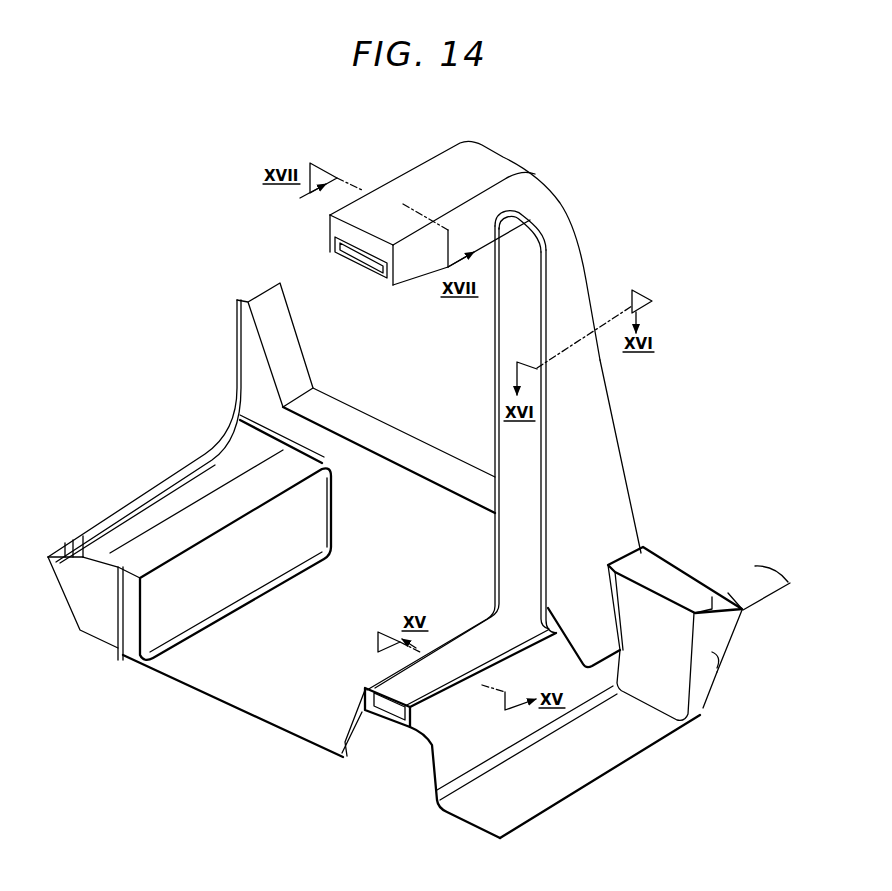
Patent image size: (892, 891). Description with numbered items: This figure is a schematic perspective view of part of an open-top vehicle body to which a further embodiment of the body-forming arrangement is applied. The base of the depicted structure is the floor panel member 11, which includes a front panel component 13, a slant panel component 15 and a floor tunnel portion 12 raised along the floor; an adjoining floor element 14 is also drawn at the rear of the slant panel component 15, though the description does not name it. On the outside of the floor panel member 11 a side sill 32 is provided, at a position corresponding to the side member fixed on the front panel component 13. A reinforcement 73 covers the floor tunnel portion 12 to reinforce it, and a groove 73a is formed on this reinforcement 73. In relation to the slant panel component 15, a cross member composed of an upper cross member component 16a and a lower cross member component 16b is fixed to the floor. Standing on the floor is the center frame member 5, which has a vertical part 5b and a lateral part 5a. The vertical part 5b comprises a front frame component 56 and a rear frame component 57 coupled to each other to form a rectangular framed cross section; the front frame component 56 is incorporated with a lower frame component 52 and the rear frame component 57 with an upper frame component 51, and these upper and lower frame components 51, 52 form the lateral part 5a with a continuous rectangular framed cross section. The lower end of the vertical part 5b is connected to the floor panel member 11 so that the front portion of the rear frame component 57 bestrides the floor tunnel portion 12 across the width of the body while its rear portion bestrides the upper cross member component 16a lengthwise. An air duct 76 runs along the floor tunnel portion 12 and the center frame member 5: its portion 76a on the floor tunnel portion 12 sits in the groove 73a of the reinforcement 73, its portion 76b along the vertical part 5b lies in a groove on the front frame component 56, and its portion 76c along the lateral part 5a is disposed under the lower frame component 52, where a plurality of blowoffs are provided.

The center frame member 5 is at (512, 146).
The lateral part of the center frame member 5a is at (392, 180).
The vertical part of the center frame member 5b is at (608, 384).
The upper frame component 51 is at (332, 213).
The lower frame component 52 is at (376, 250).
The front frame component 56 is at (495, 392).
The rear frame component 57 is at (607, 433).
The air duct 76 is at (518, 550).
The portion of the air duct on the floor tunnel portion 76a is at (370, 687).
The portion of the air duct along the vertical part 76b is at (510, 448).
The portion of the air duct along the lateral part 76c is at (352, 262).
The reinforcement 73 is at (393, 693).
The groove of the reinforcement 73a is at (400, 733).
The side sill 32 is at (84, 532).
The floor panel member 11 is at (244, 718).
The floor tunnel portion 12 is at (412, 740).
The front panel component 13 is at (573, 787).
The rear edge 14 is at (757, 590).
The slant panel component 15 is at (710, 655).
The upper cross member component 16a is at (667, 573).
The lower cross member component 16b is at (740, 626).